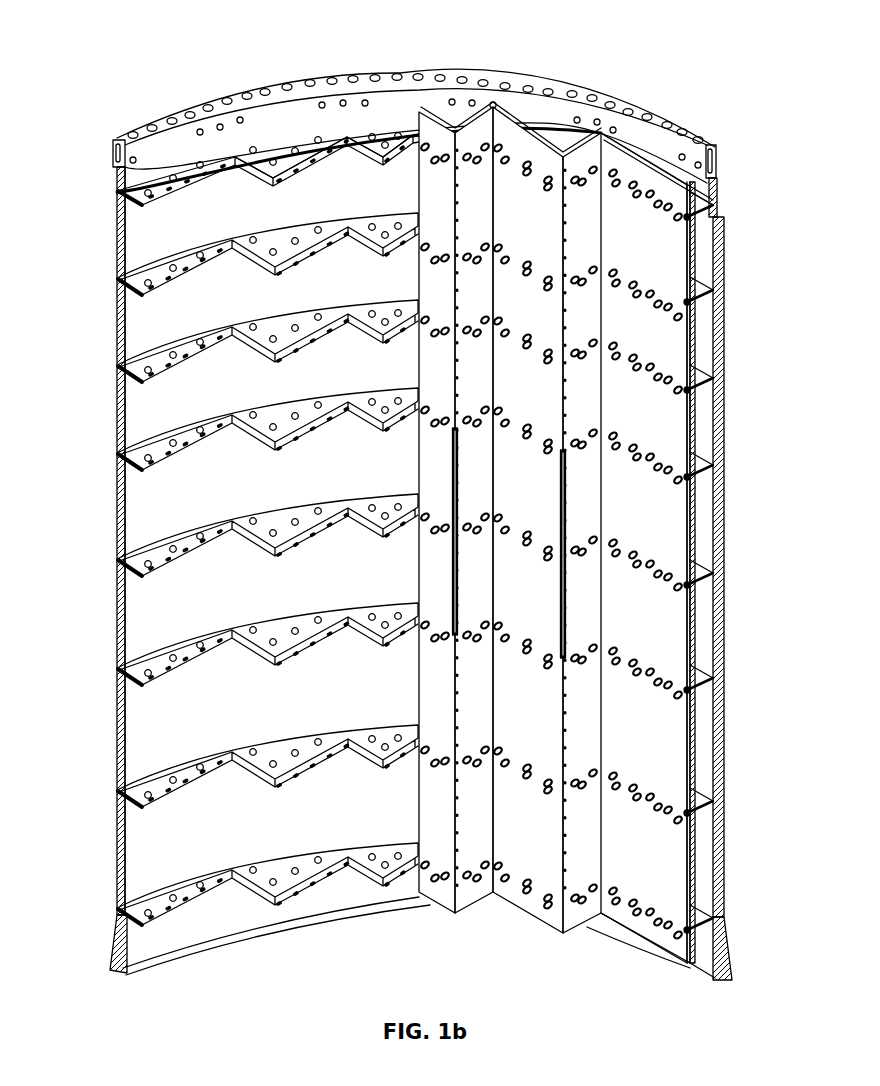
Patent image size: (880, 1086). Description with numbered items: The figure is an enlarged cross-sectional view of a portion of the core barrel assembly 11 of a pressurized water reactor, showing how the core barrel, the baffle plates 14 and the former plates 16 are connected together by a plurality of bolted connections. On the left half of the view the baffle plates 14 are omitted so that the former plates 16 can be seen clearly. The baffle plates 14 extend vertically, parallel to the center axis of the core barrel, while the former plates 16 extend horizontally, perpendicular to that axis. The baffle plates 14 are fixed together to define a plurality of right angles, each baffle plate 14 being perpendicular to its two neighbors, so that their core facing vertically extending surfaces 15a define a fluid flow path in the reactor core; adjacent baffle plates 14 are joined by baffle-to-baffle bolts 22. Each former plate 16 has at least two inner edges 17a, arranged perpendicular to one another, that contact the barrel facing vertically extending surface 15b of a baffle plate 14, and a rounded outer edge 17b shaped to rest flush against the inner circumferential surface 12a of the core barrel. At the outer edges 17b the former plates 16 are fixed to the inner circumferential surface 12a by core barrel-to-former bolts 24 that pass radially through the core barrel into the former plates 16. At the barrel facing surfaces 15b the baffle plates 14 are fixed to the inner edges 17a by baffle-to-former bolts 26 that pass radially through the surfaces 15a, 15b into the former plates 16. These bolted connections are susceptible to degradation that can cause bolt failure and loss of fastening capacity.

The core barrel assembly 11 is at (702, 127).
The inner circumferential surface 12a is at (163, 231).
The baffle plates 14 is at (438, 140).
The core facing vertically extending surfaces 15a is at (522, 172).
The barrel facing vertically extending surface 15b is at (455, 128).
The former plates 16 is at (273, 157).
The inner edges 17a is at (297, 168).
The rounded outer edge 17b is at (297, 128).
The baffle-to-baffle bolts 22 is at (457, 281).
The core barrel-to-former bolts 24 is at (722, 288).
The baffle-to-former bolts 26 is at (602, 253).